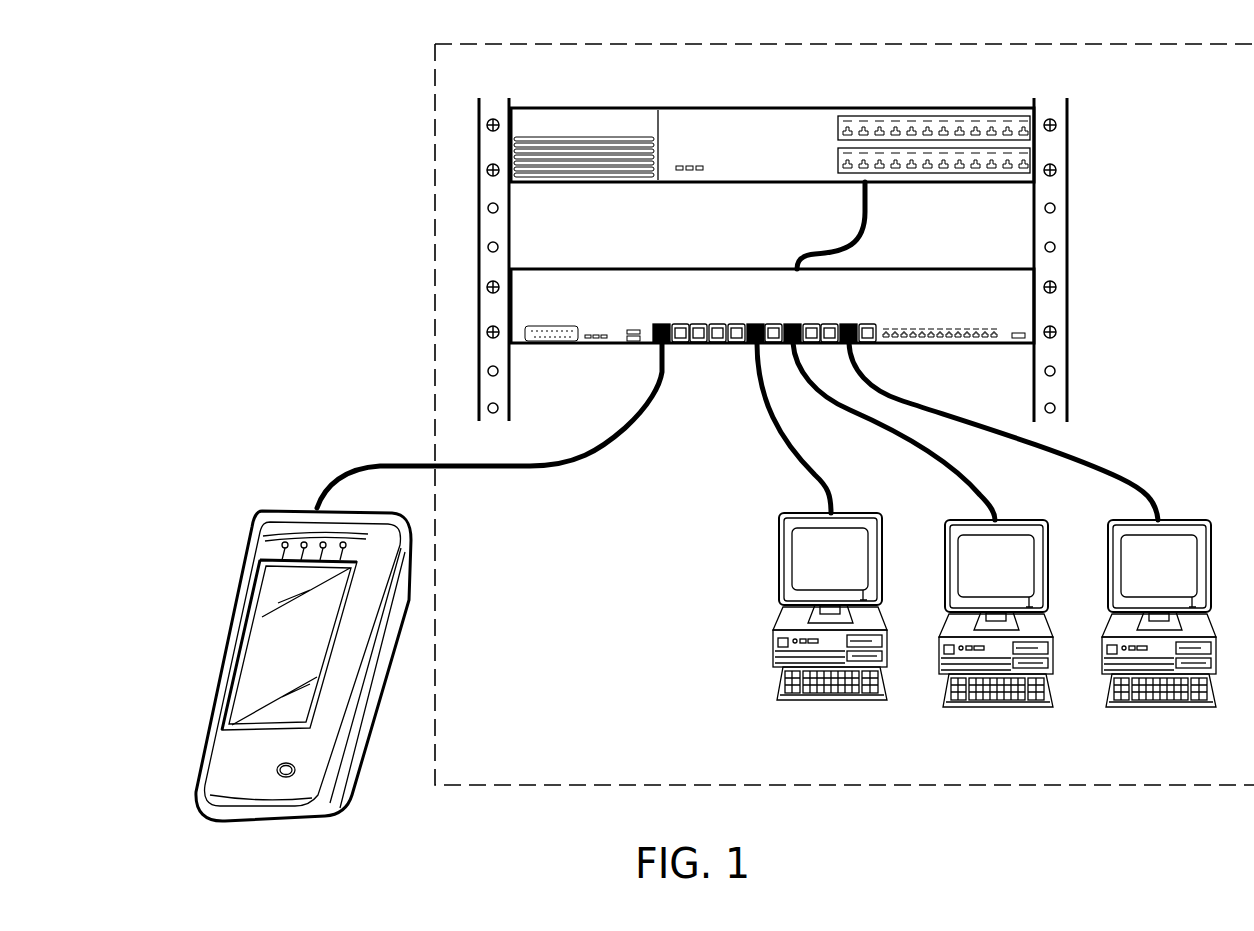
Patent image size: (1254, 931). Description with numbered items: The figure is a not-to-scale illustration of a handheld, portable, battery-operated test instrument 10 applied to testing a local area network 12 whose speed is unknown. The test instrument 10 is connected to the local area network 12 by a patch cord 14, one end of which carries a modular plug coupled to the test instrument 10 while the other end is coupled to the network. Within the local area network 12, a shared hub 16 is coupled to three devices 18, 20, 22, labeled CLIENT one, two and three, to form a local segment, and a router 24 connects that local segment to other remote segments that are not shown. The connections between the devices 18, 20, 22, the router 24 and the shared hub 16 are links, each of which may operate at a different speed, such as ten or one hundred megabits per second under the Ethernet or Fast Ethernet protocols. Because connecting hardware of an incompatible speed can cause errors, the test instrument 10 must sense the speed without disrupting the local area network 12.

The test instrument 10 is at (278, 510).
The local area network 12 is at (632, 687).
The patch cord 14 is at (483, 470).
The shared hub 16 is at (903, 268).
The device 18 is at (850, 513).
The device 20 is at (1012, 520).
The device 22 is at (1180, 520).
The router 24 is at (927, 107).